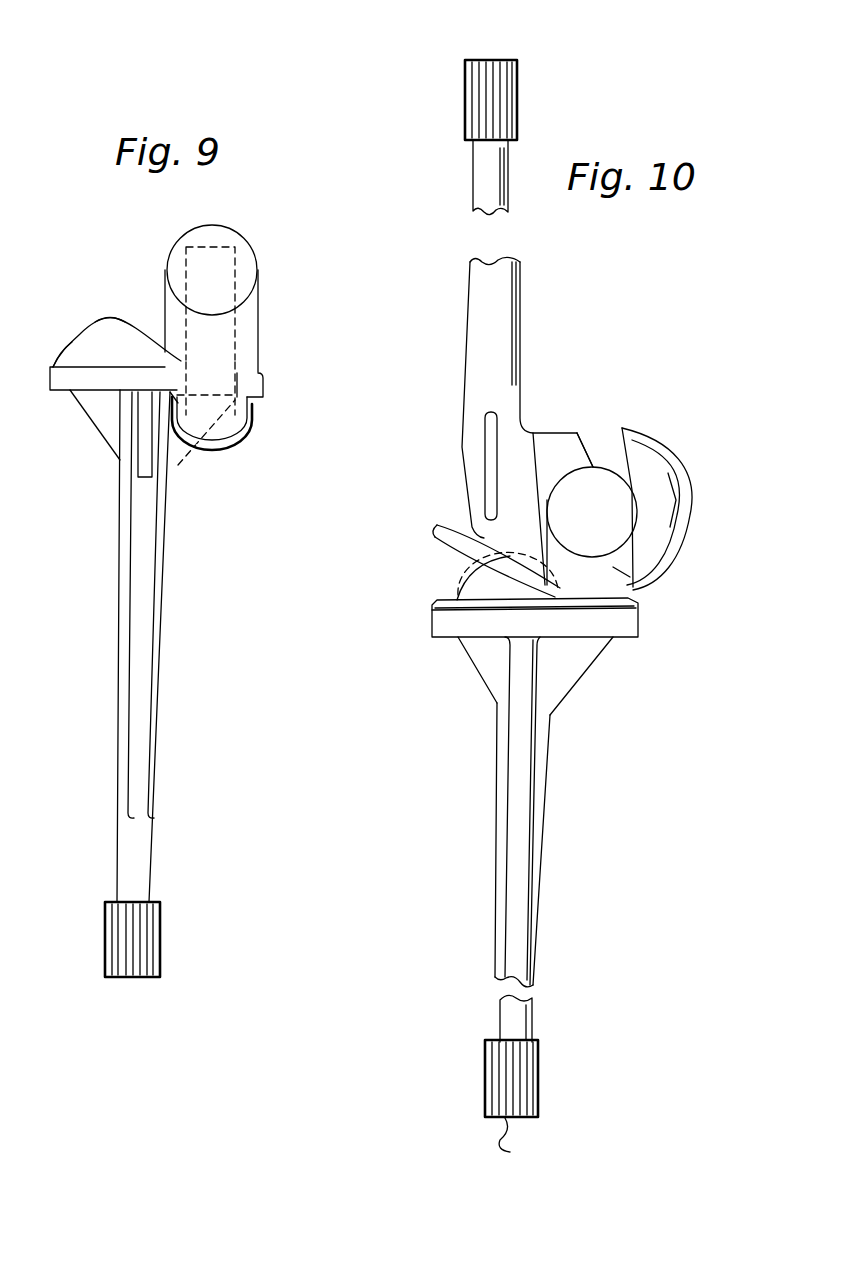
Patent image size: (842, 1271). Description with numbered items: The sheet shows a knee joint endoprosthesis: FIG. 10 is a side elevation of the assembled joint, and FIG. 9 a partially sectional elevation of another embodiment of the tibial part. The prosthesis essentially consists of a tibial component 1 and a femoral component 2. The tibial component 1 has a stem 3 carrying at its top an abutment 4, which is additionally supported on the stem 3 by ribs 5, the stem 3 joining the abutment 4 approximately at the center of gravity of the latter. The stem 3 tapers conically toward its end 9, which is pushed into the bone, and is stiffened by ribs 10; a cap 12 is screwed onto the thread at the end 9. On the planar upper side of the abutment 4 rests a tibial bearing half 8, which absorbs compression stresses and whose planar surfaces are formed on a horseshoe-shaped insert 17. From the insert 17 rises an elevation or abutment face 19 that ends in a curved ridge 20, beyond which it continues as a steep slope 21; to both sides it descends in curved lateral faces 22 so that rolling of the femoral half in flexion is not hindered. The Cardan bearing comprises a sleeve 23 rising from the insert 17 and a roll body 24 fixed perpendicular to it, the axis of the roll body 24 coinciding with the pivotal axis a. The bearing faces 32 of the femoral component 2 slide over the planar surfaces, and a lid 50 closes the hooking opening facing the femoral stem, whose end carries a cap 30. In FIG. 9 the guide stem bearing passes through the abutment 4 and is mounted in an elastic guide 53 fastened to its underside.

In FIG. 9, the tibial component 1 is at (170, 628).
In FIG. 10, the tibial component 1 is at (550, 833).
In FIG. 10, the femoral component 2 is at (520, 282).
In FIG. 9, the stem 3 is at (152, 723).
In FIG. 10, the stem 3 is at (517, 768).
In FIG. 9, the abutment 4 is at (264, 388).
In FIG. 10, the abutment 4 is at (477, 625).
In FIG. 9, the ribs 5 is at (108, 408).
In FIG. 10, the ribs 5 is at (570, 667).
In FIG. 10, the tibial bearing half 8 is at (645, 618).
In FIG. 10, the end 9 is at (512, 1144).
In FIG. 9, the ribs 10 is at (143, 540).
In FIG. 10, the cap 12 is at (540, 1070).
In FIG. 10, the insert 17 is at (450, 583).
In FIG. 9, the abutment face 19 is at (98, 334).
In FIG. 9, the ridge 20 is at (112, 318).
In FIG. 9, the slope 21 is at (70, 347).
In FIG. 10, the lateral faces 22 is at (480, 587).
In FIG. 9, the sleeve 23 is at (242, 335).
In FIG. 9, the roll body 24 is at (247, 267).
In FIG. 10, the roll body 24 is at (593, 486).
In FIG. 10, the cap 30 is at (473, 57).
In FIG. 10, the bearing faces 32 is at (640, 577).
In FIG. 10, the lid 50 is at (553, 447).
In FIG. 9, the elastic guide 53 is at (230, 467).